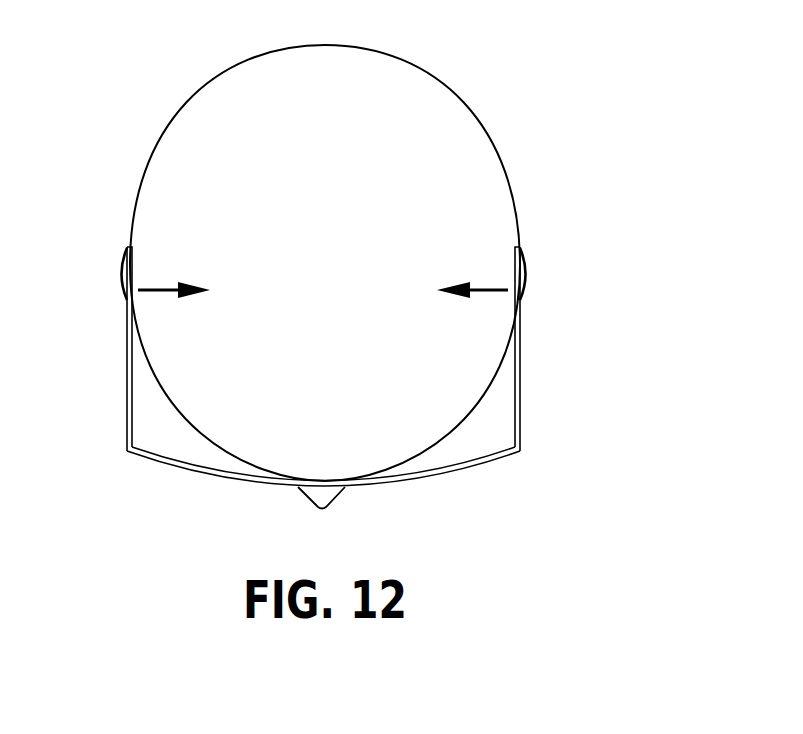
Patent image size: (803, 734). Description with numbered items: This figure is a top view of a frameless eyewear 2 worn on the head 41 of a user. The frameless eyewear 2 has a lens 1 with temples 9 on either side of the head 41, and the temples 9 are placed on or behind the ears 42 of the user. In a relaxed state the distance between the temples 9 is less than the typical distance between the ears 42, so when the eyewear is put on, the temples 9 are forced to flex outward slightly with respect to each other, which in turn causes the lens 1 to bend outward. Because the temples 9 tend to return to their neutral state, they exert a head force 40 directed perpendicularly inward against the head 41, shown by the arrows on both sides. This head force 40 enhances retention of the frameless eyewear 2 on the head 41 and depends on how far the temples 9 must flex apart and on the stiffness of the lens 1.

The lens 1 is at (333, 402).
The frameless eyewear 2 is at (345, 366).
The temples 9 is at (125, 380).
The head force 40 is at (162, 286).
The head 41 is at (420, 122).
The ears 42 is at (119, 272).